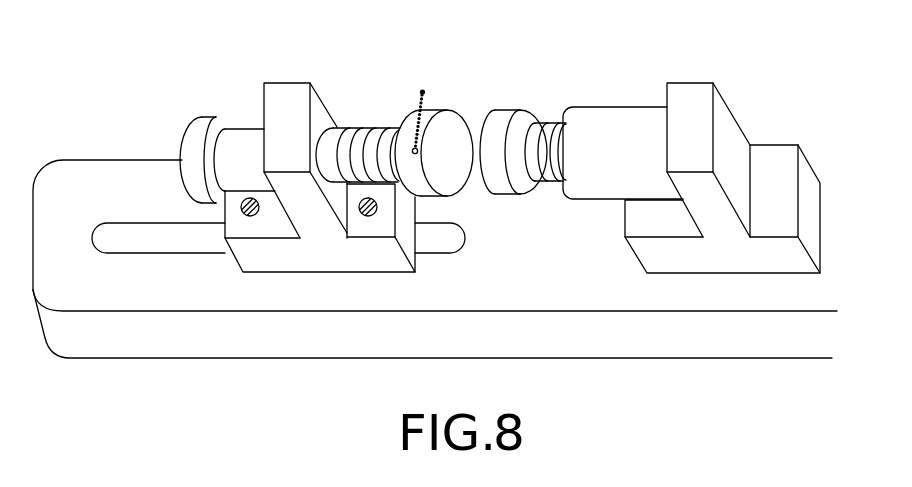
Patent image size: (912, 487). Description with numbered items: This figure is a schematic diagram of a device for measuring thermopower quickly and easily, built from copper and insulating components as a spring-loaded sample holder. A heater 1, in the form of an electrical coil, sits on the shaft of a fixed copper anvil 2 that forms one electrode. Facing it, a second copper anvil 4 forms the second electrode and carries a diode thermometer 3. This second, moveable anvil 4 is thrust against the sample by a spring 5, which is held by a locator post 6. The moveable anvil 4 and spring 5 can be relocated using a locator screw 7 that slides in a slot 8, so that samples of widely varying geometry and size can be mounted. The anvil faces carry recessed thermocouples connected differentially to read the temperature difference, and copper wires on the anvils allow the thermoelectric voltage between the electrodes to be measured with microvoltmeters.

The heater 1 is at (552, 184).
The fixed copper anvil 2 is at (505, 195).
The diode thermometer 3 is at (418, 152).
The second copper anvil 4 is at (462, 110).
The spring 5 is at (367, 127).
The locator post 6 is at (290, 83).
The locator screw 7 is at (253, 216).
The slot 8 is at (202, 253).